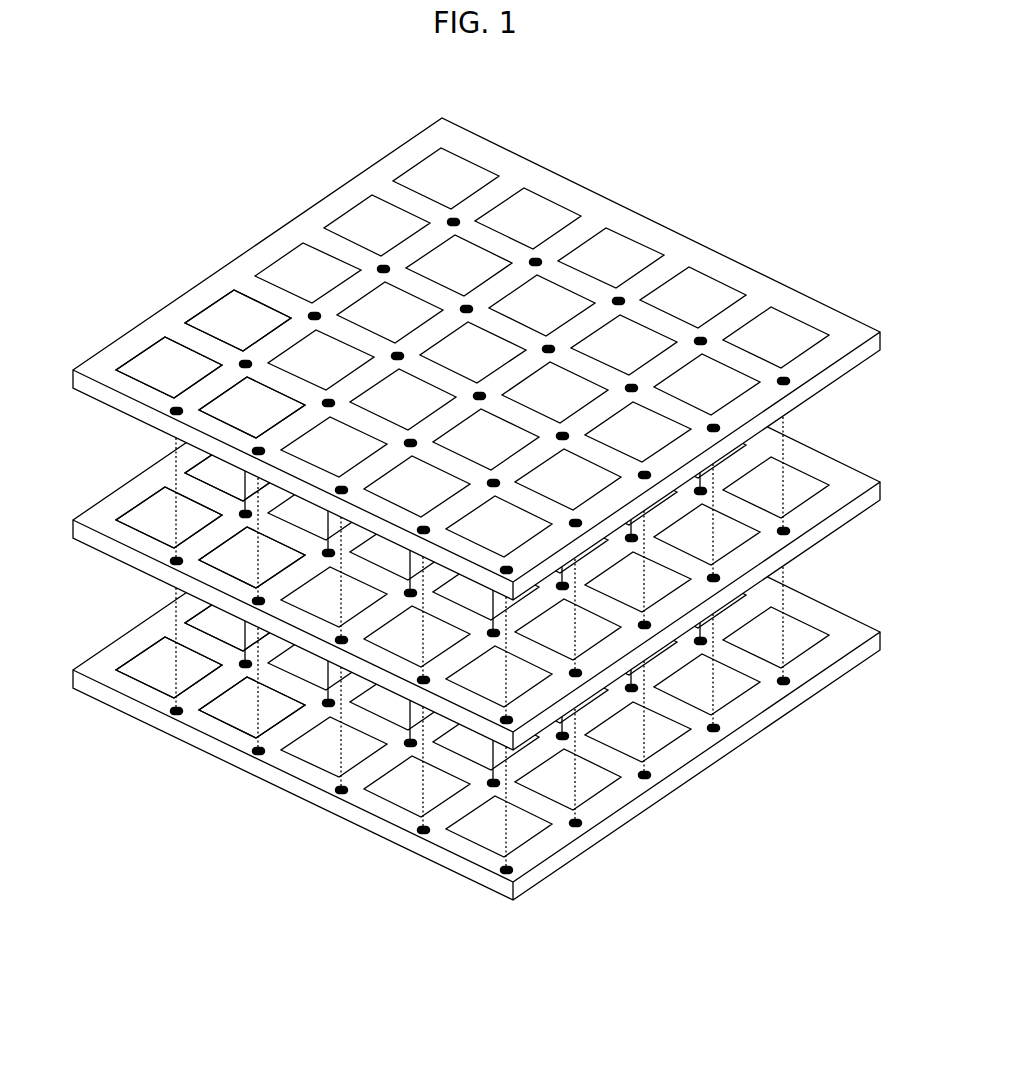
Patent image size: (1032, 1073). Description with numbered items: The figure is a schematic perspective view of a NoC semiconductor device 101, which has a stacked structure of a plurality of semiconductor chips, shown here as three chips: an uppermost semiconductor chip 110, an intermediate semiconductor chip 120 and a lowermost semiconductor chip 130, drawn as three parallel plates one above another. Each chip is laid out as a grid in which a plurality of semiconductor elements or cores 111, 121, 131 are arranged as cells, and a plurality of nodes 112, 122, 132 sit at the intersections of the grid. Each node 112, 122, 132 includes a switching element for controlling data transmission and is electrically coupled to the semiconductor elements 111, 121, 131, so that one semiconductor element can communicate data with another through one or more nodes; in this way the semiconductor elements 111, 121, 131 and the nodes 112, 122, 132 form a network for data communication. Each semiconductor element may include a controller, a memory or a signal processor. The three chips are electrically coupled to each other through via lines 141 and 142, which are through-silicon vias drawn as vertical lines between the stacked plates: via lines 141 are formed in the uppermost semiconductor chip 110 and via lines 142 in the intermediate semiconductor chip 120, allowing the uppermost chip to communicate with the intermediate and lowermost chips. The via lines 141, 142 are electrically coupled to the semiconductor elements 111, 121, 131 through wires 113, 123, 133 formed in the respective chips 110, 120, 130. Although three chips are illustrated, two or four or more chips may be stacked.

The NoC semiconductor device 101 is at (672, 175).
The uppermost semiconductor chip 110 is at (476, 359).
The semiconductor element 111 is at (157, 357).
The node 112 is at (212, 356).
The wire 113 is at (213, 388).
The intermediate semiconductor chip 120 is at (476, 509).
The semiconductor element 121 is at (128, 493).
The node 122 is at (174, 453).
The wire 123 is at (161, 536).
The lowermost semiconductor chip 130 is at (476, 659).
The semiconductor element 131 is at (128, 643).
The node 132 is at (174, 603).
The wire 133 is at (161, 686).
The via line 141 is at (785, 420).
The via line 142 is at (785, 570).